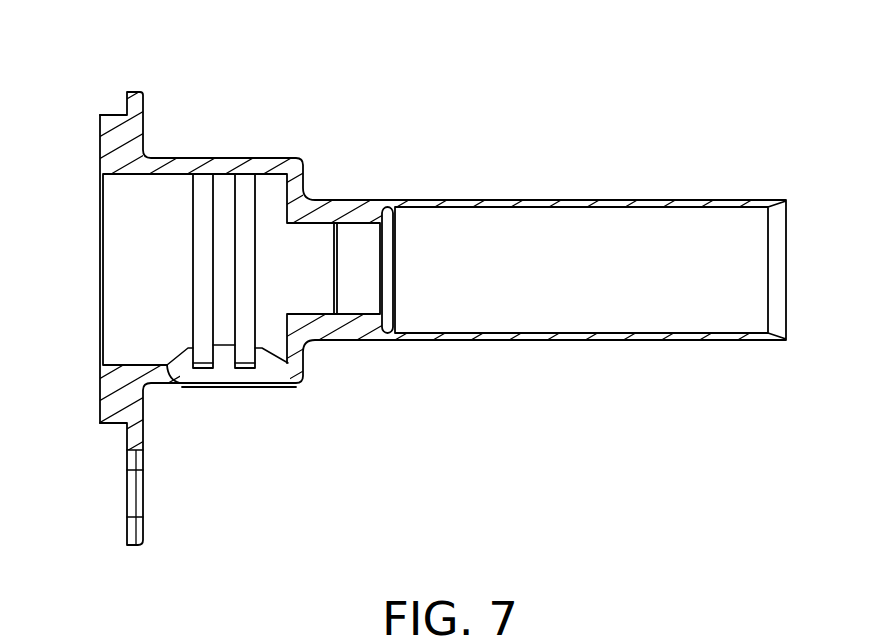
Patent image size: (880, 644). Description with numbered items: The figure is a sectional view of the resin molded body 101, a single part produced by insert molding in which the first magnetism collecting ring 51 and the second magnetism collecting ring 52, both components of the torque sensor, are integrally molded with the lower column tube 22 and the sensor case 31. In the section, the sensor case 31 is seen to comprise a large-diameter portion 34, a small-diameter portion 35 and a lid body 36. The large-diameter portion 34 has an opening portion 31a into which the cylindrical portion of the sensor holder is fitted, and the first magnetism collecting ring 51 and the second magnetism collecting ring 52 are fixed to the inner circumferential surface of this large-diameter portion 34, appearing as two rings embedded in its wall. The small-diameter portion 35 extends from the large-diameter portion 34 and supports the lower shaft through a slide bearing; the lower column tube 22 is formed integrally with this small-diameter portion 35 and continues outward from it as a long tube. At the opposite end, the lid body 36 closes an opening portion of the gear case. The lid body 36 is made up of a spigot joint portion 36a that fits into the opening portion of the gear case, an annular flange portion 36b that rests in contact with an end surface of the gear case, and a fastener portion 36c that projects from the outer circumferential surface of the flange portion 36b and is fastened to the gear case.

The resin molded body 101 is at (569, 130).
The lower column tube 22 is at (677, 204).
The sensor case 31 is at (302, 152).
The opening portion 31a is at (178, 380).
The large-diameter portion 34 is at (257, 167).
The small-diameter portion 35 is at (350, 202).
The lid body 36 is at (150, 92).
The spigot joint portion 36a is at (110, 117).
The annular flange portion 36b is at (141, 97).
The fastener portion 36c is at (145, 527).
The first magnetism collecting ring 51 is at (247, 355).
The second magnetism collecting ring 52 is at (203, 353).